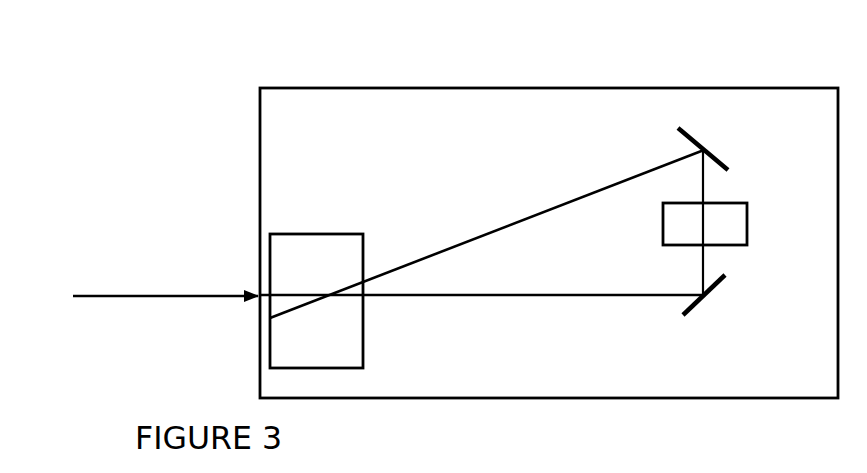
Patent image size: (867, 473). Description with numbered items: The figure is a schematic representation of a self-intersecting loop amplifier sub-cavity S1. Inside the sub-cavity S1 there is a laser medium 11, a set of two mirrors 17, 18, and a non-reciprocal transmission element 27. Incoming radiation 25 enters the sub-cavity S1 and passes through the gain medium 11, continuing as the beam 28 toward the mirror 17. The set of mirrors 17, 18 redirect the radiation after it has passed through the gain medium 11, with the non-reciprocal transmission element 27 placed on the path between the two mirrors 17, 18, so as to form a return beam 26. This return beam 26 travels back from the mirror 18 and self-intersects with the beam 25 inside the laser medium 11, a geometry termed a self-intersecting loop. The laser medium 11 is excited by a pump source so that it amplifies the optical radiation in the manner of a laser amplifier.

The sub-cavity S1 is at (331, 79).
The laser medium 11 is at (321, 224).
The radiation 25 is at (156, 284).
The return beam 26 is at (506, 212).
The second partial beam 28 is at (529, 306).
The mirror 18 is at (726, 149).
The non-reciprocal transmission element 27 is at (750, 221).
The mirror 17 is at (706, 308).